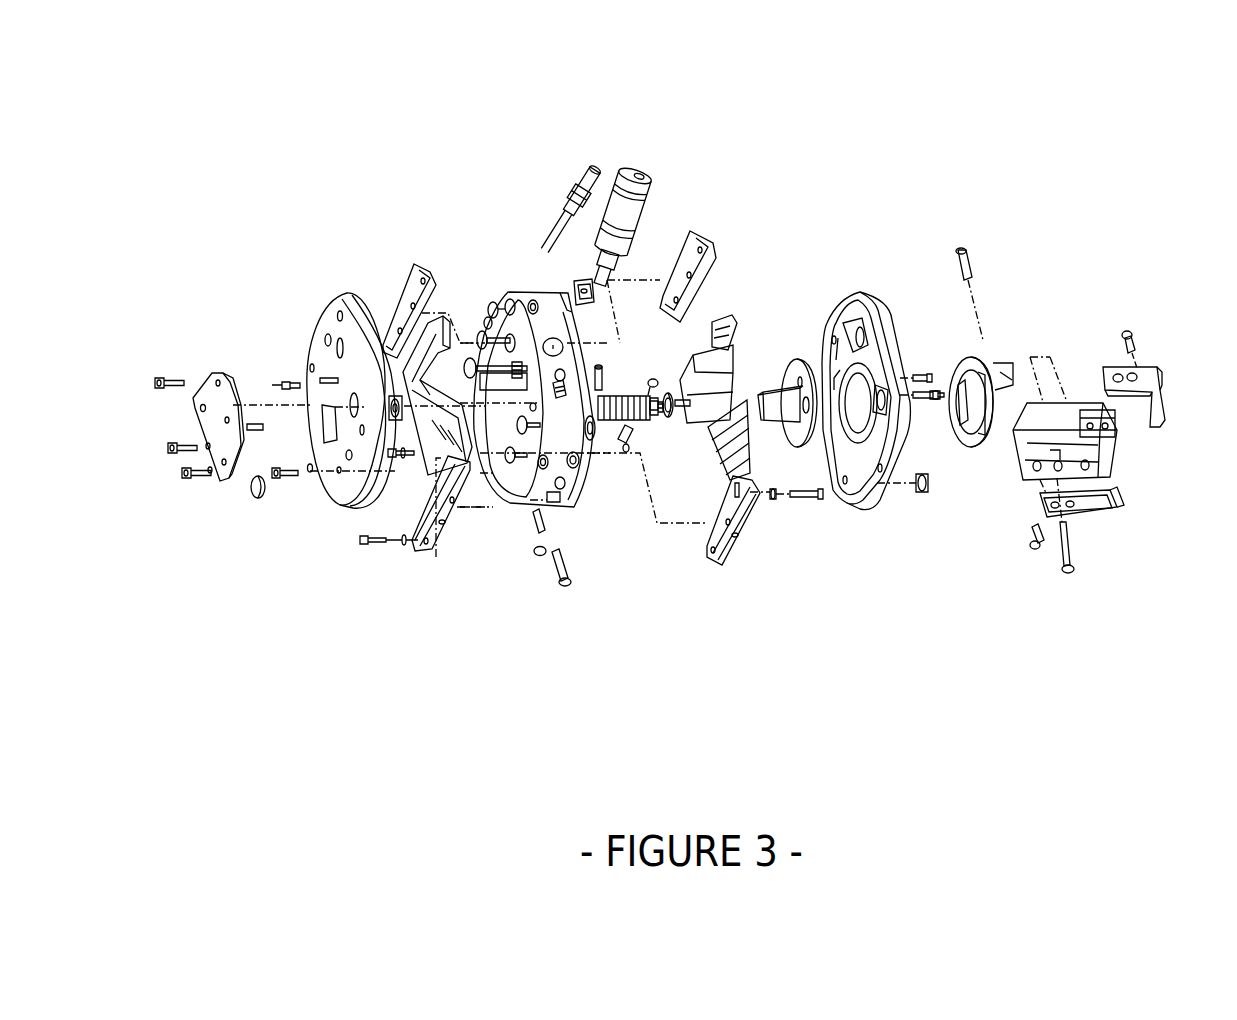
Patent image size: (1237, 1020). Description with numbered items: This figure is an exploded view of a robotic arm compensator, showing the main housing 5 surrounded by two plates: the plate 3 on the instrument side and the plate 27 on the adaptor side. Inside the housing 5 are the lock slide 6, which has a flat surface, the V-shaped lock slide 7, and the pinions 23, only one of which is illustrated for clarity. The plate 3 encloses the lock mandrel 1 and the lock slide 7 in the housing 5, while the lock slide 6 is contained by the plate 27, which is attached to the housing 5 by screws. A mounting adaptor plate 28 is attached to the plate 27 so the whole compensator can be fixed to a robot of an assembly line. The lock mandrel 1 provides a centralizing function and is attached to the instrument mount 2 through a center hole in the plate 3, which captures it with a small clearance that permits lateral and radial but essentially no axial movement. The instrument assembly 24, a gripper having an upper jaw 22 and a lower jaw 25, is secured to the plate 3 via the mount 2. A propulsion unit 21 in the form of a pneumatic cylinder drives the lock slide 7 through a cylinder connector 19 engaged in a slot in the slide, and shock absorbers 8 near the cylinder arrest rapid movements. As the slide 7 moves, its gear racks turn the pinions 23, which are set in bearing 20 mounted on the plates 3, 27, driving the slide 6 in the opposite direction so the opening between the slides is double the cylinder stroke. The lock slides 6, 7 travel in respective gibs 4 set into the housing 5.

The lock mandrel 1 is at (781, 407).
The instrument mount 2 is at (983, 450).
The plate 3 is at (860, 457).
The gibs 4 is at (454, 455).
The housing 5 is at (574, 368).
The lock slide 6 is at (437, 405).
The lock slide 7 is at (705, 407).
The shock absorbers 8 is at (582, 275).
The cylinder connector 19 is at (576, 365).
The bearing 20 is at (397, 422).
The propulsion unit 21 is at (625, 212).
The upper jaw 22 is at (1137, 363).
The pinions 23 is at (621, 428).
The instrument assembly 24 is at (1073, 405).
The lower jaw 25 is at (1097, 507).
The plate 27 is at (333, 458).
The mounting adaptor plate 28 is at (226, 476).